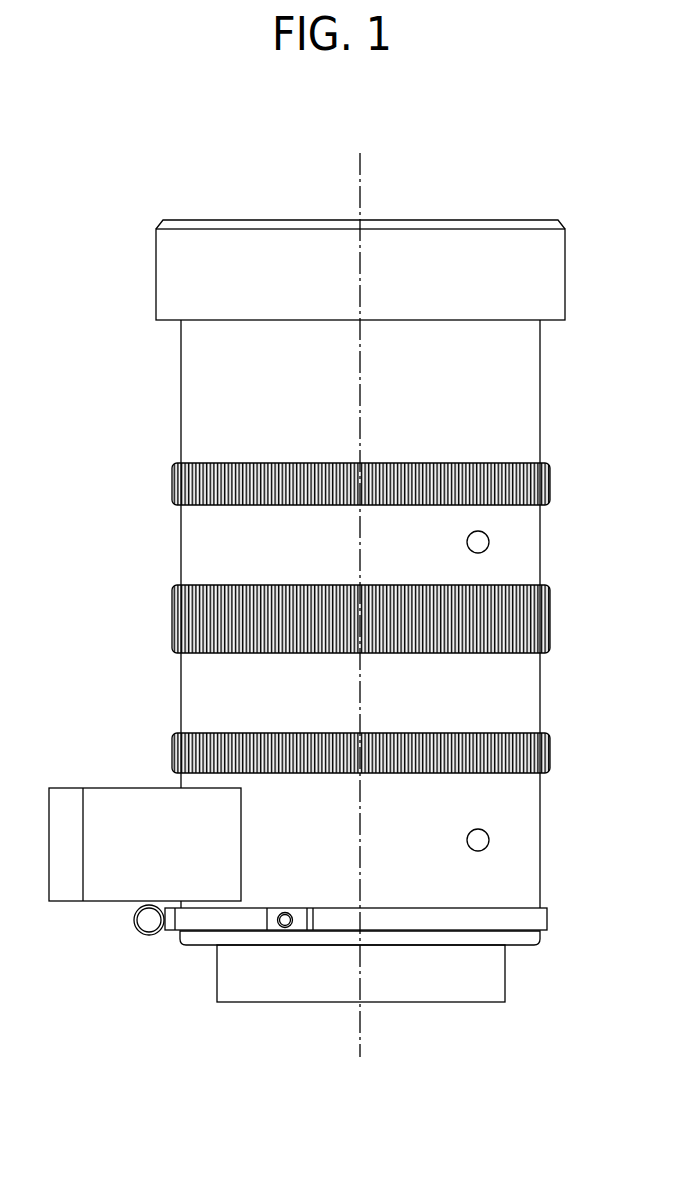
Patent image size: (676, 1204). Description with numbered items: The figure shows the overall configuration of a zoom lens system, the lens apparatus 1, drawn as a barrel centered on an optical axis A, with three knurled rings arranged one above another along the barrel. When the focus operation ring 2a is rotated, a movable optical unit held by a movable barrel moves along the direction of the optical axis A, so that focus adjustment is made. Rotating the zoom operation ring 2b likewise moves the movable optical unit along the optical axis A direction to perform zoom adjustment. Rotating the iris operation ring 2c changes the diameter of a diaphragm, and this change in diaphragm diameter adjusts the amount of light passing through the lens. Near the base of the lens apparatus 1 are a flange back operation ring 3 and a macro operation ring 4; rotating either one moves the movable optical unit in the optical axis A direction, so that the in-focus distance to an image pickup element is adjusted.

The lens apparatus 1 is at (120, 373).
The focus operation ring 2a is at (172, 483).
The zoom operation ring 2b is at (172, 613).
The iris operation ring 2c is at (172, 750).
The flange back operation ring 3 is at (145, 922).
The macro operation ring 4 is at (284, 912).
The optical axis A is at (361, 167).